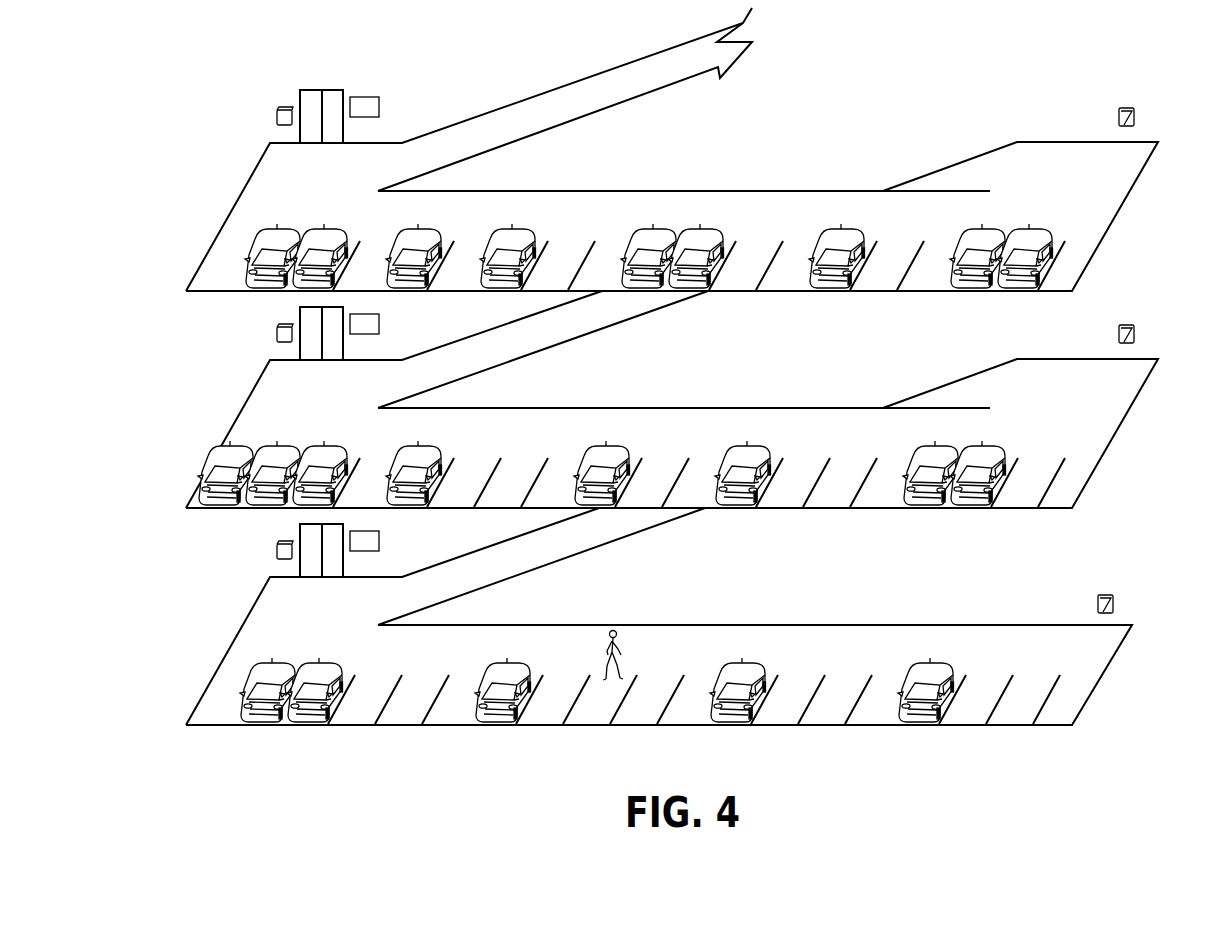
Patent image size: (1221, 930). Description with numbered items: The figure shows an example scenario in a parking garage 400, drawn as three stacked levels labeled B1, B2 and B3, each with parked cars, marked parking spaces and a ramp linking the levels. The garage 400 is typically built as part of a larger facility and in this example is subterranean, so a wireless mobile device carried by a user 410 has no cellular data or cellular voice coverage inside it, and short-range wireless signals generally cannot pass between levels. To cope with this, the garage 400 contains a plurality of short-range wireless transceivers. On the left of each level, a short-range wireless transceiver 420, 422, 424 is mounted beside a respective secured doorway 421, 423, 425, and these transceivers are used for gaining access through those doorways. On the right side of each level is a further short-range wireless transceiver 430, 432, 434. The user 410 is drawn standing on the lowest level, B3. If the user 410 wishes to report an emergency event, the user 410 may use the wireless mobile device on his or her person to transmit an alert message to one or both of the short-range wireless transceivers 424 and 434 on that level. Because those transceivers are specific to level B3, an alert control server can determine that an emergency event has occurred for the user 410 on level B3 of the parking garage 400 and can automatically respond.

The parking garage 400 is at (733, 197).
The user 410 is at (623, 627).
The short-range wireless transceiver 420 is at (280, 118).
The secured doorway 421 is at (333, 127).
The short-range wireless transceiver 422 is at (280, 338).
The secured doorway 423 is at (333, 348).
The short-range wireless transceiver 424 is at (280, 555).
The secured doorway 425 is at (333, 565).
The short-range wireless transceiver 430 is at (1132, 107).
The short-range wireless transceiver 432 is at (1132, 324).
The short-range wireless transceiver 434 is at (1108, 595).